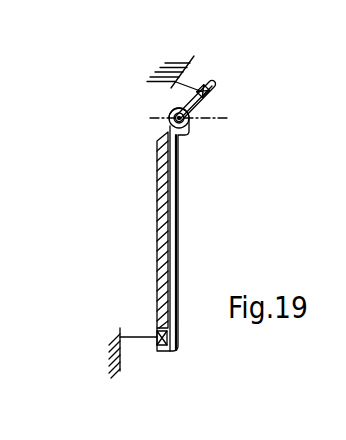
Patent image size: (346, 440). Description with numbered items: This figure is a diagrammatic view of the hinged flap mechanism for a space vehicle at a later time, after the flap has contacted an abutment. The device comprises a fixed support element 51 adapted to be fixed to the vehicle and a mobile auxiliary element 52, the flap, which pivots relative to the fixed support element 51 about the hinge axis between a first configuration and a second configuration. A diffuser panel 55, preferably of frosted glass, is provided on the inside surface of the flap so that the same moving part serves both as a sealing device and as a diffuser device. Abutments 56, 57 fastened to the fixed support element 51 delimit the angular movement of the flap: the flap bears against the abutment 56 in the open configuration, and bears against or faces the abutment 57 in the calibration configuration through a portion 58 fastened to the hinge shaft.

The fixed support element 51 is at (172, 84).
The mobile auxiliary element 52 is at (178, 206).
The diffuser panel 55 is at (158, 172).
The abutment 56 is at (163, 346).
The abutment 57 is at (213, 86).
The portion fastened to the shaft 58 is at (207, 95).